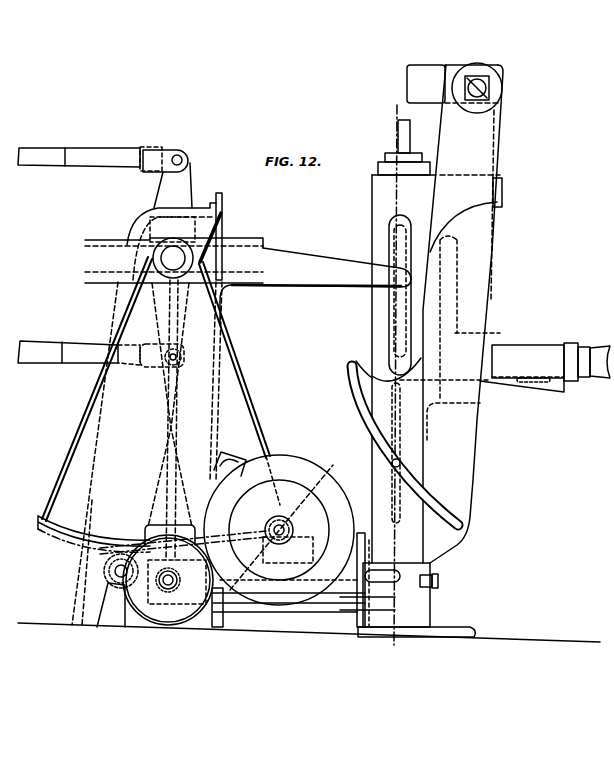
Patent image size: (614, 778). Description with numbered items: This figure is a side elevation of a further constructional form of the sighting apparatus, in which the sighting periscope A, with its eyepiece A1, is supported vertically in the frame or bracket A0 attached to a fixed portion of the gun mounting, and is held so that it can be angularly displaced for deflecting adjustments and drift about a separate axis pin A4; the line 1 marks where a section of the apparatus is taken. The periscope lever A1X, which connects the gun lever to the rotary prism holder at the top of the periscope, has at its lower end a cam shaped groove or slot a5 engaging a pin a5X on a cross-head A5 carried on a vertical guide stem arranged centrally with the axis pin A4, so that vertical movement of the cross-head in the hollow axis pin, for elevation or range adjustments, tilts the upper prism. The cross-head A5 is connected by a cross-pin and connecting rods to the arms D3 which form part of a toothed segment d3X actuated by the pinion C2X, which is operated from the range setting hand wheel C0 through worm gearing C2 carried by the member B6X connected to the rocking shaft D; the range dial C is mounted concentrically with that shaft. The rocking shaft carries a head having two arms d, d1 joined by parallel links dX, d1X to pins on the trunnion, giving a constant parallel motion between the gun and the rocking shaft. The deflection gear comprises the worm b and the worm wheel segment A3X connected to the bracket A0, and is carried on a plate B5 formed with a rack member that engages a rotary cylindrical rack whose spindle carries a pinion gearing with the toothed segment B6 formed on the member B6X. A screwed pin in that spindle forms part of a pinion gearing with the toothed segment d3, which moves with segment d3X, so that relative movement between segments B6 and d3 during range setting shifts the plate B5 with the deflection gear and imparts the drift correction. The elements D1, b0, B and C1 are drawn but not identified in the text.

The parallel link dX is at (43, 157).
The arm d is at (180, 193).
The rocking shaft D is at (182, 252).
The bracket D1 is at (112, 250).
The arm D3 is at (297, 267).
The arm d1 is at (180, 322).
The parallel link d1X is at (42, 355).
The toothed segment d3X is at (248, 400).
The toothed segment d3 is at (72, 502).
The member B6X is at (112, 453).
The toothed segment B6 is at (63, 543).
The small gear b0 is at (108, 573).
The worm b is at (135, 630).
The wheel B is at (168, 575).
The worm wheel segment A3X is at (220, 592).
The plate B5 is at (240, 600).
The post C1 is at (318, 626).
The range dial C is at (279, 528).
The pinion C2X is at (300, 475).
The worm gearing C2 is at (316, 493).
The hand wheel C0 is at (360, 557).
The pin a5X is at (400, 464).
The cam shaped groove a5 is at (408, 486).
The cross-head A5 is at (398, 343).
The bracket A0 is at (393, 203).
The axis pin A4 is at (400, 141).
The sighting periscope A is at (492, 300).
The periscope lever A1X is at (448, 360).
The eyepiece A1 is at (577, 345).
The section line 1 is at (395, 381).